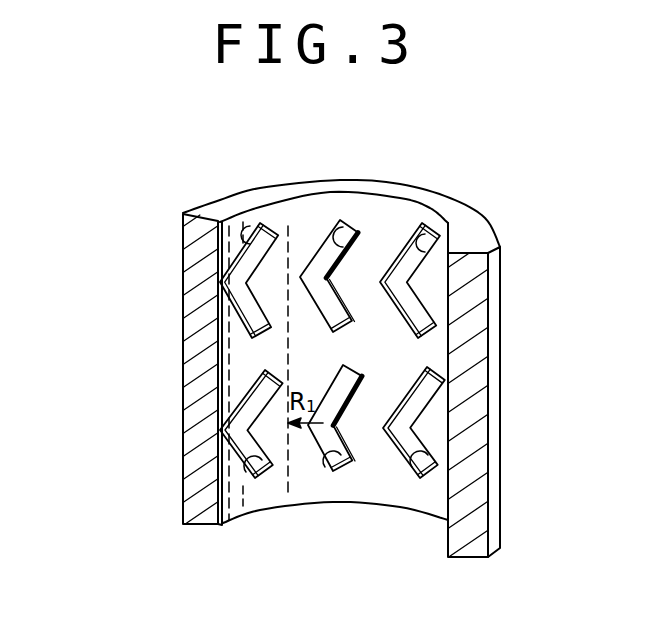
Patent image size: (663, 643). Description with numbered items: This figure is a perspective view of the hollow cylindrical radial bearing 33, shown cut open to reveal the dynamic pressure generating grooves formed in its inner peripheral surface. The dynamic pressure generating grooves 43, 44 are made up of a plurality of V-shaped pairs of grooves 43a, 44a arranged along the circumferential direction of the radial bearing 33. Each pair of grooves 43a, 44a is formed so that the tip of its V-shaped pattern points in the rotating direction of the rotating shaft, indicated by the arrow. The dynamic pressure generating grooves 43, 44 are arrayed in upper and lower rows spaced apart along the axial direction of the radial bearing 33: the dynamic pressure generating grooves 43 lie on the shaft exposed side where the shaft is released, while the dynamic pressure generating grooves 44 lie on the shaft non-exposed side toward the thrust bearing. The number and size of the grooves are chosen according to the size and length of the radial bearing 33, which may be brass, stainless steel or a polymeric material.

The radial bearing 33 is at (450, 197).
The dynamic pressure generating grooves 43 is at (240, 262).
The pair of grooves 43a is at (255, 225).
The dynamic pressure generating grooves 44 is at (183, 485).
The pair of grooves 44a is at (252, 470).